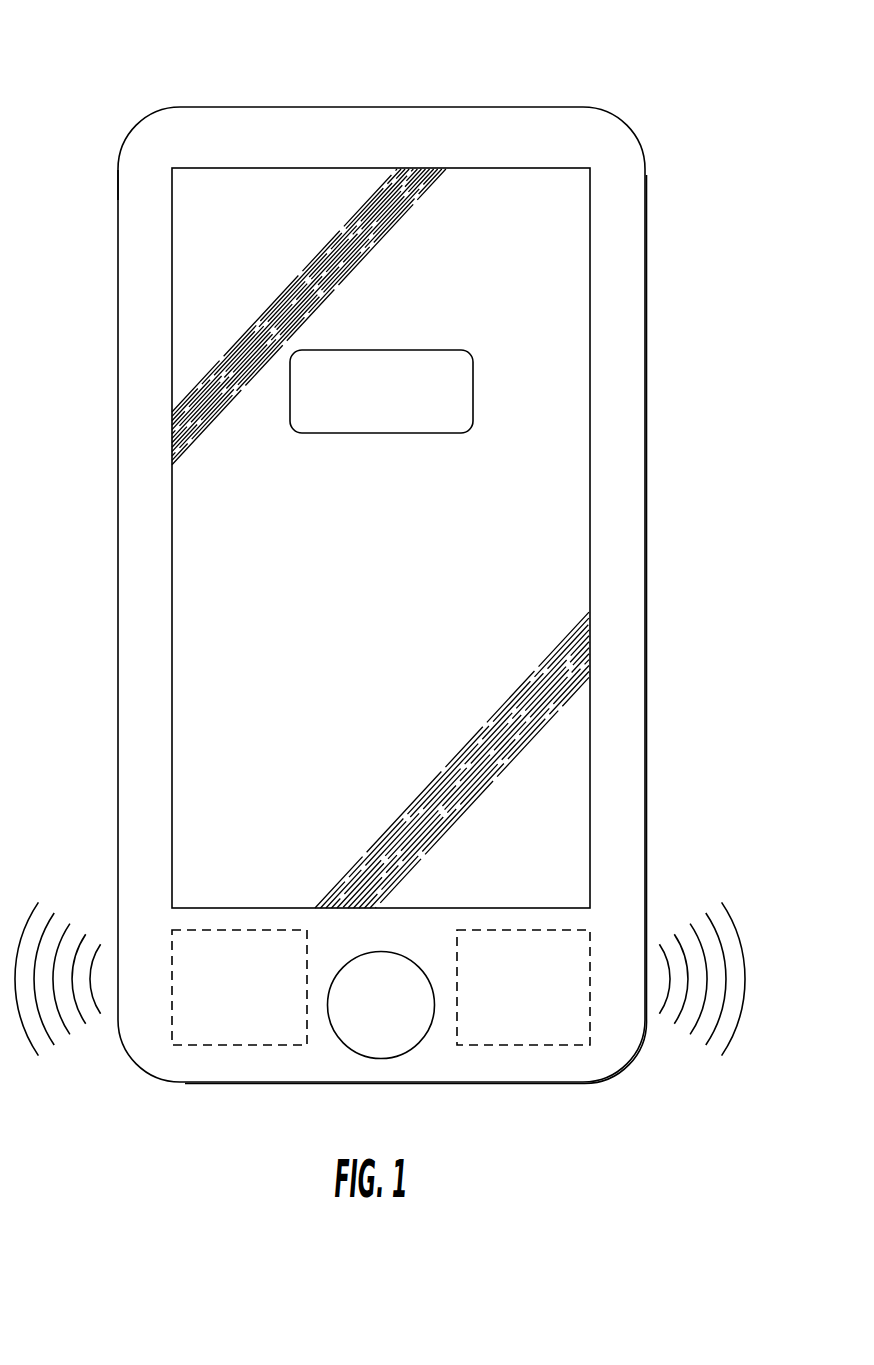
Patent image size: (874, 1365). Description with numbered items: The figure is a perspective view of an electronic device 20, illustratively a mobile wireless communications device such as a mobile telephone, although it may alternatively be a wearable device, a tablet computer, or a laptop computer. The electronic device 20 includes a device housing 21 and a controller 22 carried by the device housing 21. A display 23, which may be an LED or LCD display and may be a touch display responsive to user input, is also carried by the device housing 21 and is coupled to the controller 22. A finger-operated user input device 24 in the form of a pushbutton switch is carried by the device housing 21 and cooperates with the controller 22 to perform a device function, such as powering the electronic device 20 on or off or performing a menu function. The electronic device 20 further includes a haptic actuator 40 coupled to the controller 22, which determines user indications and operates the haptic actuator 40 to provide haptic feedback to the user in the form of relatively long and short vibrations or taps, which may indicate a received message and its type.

The electronic device 20 is at (102, 100).
The device housing 21 is at (118, 290).
The display 23 is at (172, 523).
The controller 22 is at (237, 1046).
The finger-operated user input device 24 is at (378, 1059).
The haptic actuator 40 is at (515, 1046).